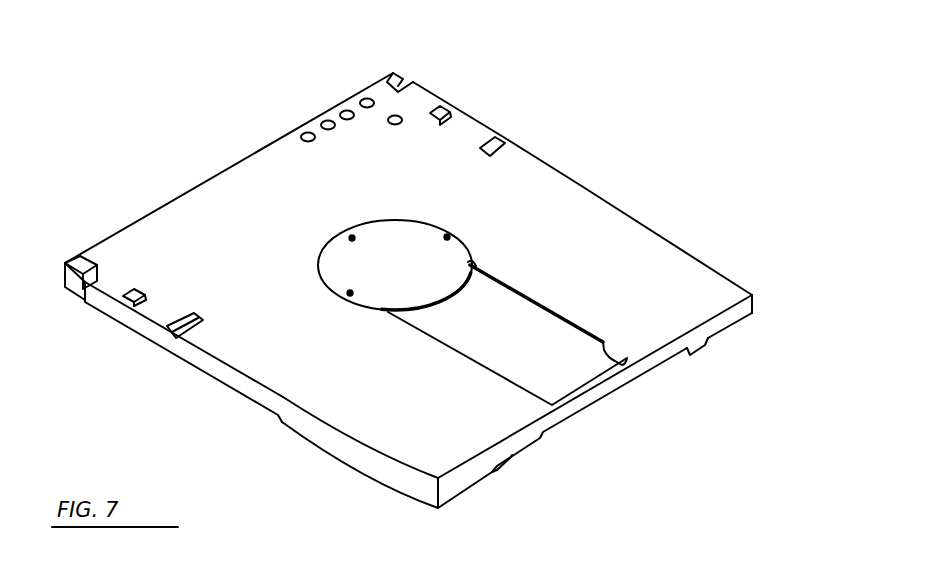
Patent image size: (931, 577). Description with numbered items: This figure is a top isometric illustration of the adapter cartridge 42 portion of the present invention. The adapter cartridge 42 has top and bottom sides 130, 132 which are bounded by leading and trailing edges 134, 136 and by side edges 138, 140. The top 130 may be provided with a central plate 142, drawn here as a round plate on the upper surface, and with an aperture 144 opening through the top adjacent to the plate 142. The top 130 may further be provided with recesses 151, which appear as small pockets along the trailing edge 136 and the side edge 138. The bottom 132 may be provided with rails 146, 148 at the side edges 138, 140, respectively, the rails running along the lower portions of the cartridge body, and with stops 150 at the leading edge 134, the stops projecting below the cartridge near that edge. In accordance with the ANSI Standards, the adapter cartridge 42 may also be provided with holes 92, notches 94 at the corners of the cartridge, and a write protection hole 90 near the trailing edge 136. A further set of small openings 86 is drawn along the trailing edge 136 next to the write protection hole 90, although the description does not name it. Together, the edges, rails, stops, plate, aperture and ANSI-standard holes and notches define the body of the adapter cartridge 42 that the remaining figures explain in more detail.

The adapter cartridge 42 is at (677, 73).
The mounting holes 86 is at (330, 120).
The write protection hole 90 is at (401, 117).
The holes 92 is at (447, 108).
The notches 94 is at (403, 82).
The top side 130 is at (317, 393).
The bottom side 132 is at (193, 363).
The leading edge 134 is at (590, 400).
The trailing edge 136 is at (243, 158).
The side edge 138 is at (240, 377).
The side edge 140 is at (577, 177).
The central plate 142 is at (422, 257).
The aperture 144 is at (540, 348).
The rail 146 is at (343, 463).
The rail 148 is at (752, 313).
The stops 150 is at (697, 352).
The recesses 151 is at (500, 142).